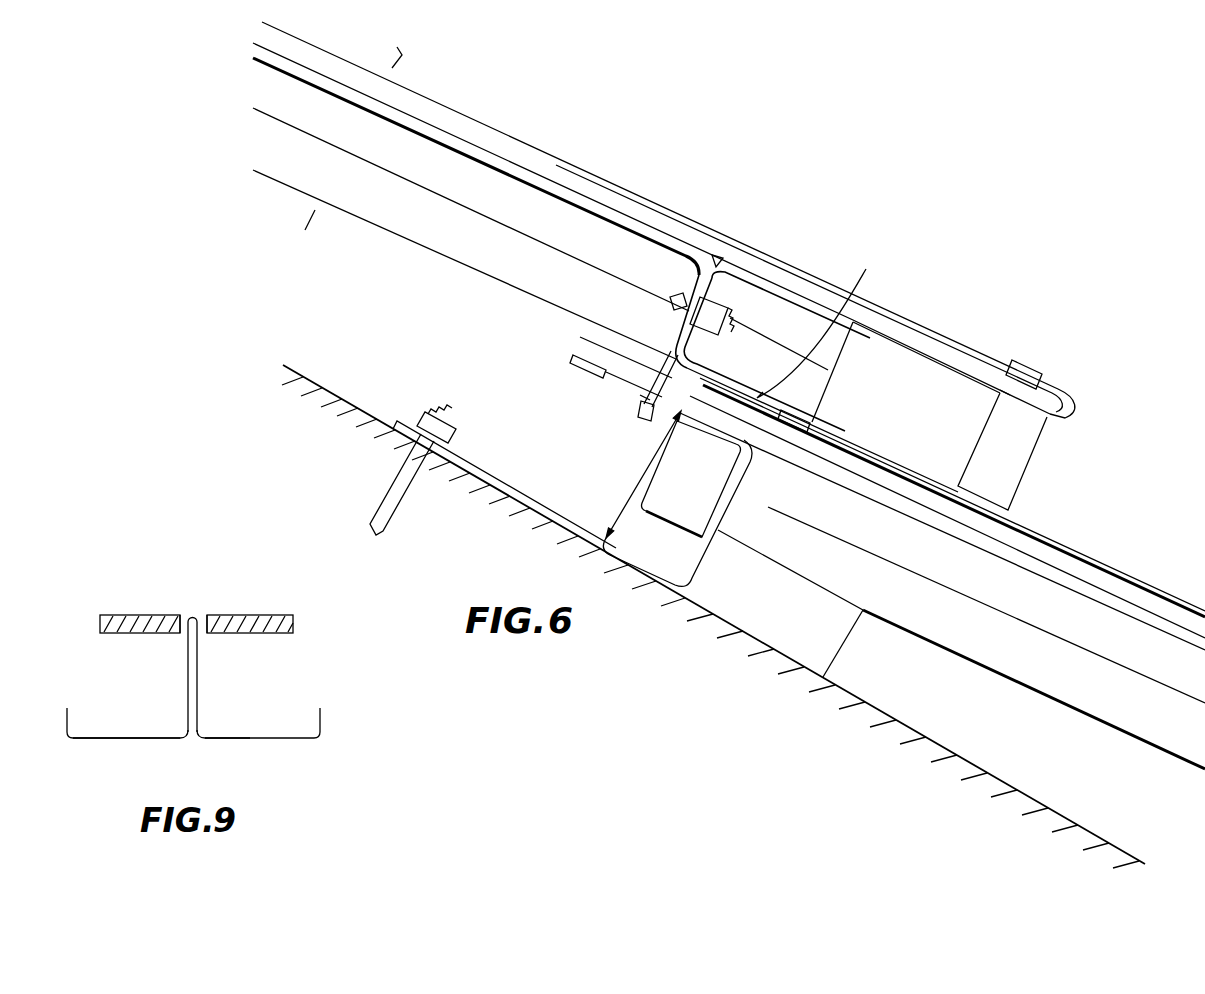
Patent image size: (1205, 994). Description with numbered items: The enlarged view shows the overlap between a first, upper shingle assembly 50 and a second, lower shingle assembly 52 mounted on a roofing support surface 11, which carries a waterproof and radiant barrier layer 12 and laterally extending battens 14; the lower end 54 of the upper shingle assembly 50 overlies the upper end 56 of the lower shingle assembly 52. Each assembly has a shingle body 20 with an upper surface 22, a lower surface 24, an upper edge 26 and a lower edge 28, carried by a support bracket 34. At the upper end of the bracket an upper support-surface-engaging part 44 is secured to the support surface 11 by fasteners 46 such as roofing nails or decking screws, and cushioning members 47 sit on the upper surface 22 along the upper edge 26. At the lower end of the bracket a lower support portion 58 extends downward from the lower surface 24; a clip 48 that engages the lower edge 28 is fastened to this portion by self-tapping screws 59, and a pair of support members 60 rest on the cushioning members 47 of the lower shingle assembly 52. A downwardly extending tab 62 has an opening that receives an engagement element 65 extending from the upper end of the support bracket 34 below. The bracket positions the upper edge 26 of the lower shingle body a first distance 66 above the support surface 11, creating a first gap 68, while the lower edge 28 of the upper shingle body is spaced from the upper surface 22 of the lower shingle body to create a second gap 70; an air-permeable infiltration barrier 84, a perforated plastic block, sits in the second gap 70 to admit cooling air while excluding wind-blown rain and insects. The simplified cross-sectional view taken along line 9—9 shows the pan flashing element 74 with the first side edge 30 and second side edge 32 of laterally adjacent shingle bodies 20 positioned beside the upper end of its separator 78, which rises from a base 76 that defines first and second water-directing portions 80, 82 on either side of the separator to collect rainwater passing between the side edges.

In FIG. 6, the section line 9— 9 is at (390, 50).
In FIG. 6, the roofing support surface 11 is at (933, 738).
In FIG. 6, the waterproof and radiant barrier layer 12 is at (710, 622).
In FIG. 6, the battens 14 is at (782, 616).
In FIG. 6, the shingle body 20 is at (473, 110).
In FIG. 9, the shingle body 20 is at (137, 612).
In FIG. 6, the upper surface 22 is at (534, 143).
In FIG. 6, the lower surface 24 is at (715, 257).
In FIG. 6, the upper edge 26 is at (652, 392).
In FIG. 6, the lower edge 28 is at (1052, 397).
In FIG. 9, the first side edge 30 is at (183, 612).
In FIG. 9, the second side edge 32 is at (212, 612).
In FIG. 6, the support bracket 34 is at (512, 188).
In FIG. 6, the upper support-surface-engaging part 44 is at (527, 509).
In FIG. 6, the fasteners 46 is at (403, 497).
In FIG. 6, the cushioning members 47 is at (795, 410).
In FIG. 6, the clip 48 is at (1067, 421).
In FIG. 6, the upper shingle assembly 50 is at (643, 125).
In FIG. 6, the lower shingle assembly 52 is at (1184, 521).
In FIG. 6, the lower end 54 is at (1097, 353).
In FIG. 6, the upper end 56 is at (535, 396).
In FIG. 6, the lower support portion 58 is at (630, 306).
In FIG. 6, the self-tapping screws 59 is at (740, 305).
In FIG. 6, the support members 60 is at (866, 269).
In FIG. 6, the downwardly extending tab 62 is at (580, 337).
In FIG. 6, the engagement element 65 is at (584, 376).
In FIG. 6, the first distance 66 is at (655, 455).
In FIG. 6, the first gap 68 is at (618, 489).
In FIG. 6, the second gap 70 is at (1027, 445).
In FIG. 6, the pan flashing element 74 is at (1046, 461).
In FIG. 9, the pan flashing element 74 is at (334, 744).
In FIG. 9, the base 76 is at (141, 750).
In FIG. 9, the separator 78 is at (198, 668).
In FIG. 9, the first water-directing portion 80 is at (160, 740).
In FIG. 9, the second water-directing portion 82 is at (227, 740).
In FIG. 6, the air-permeable infiltration barrier 84 is at (923, 420).